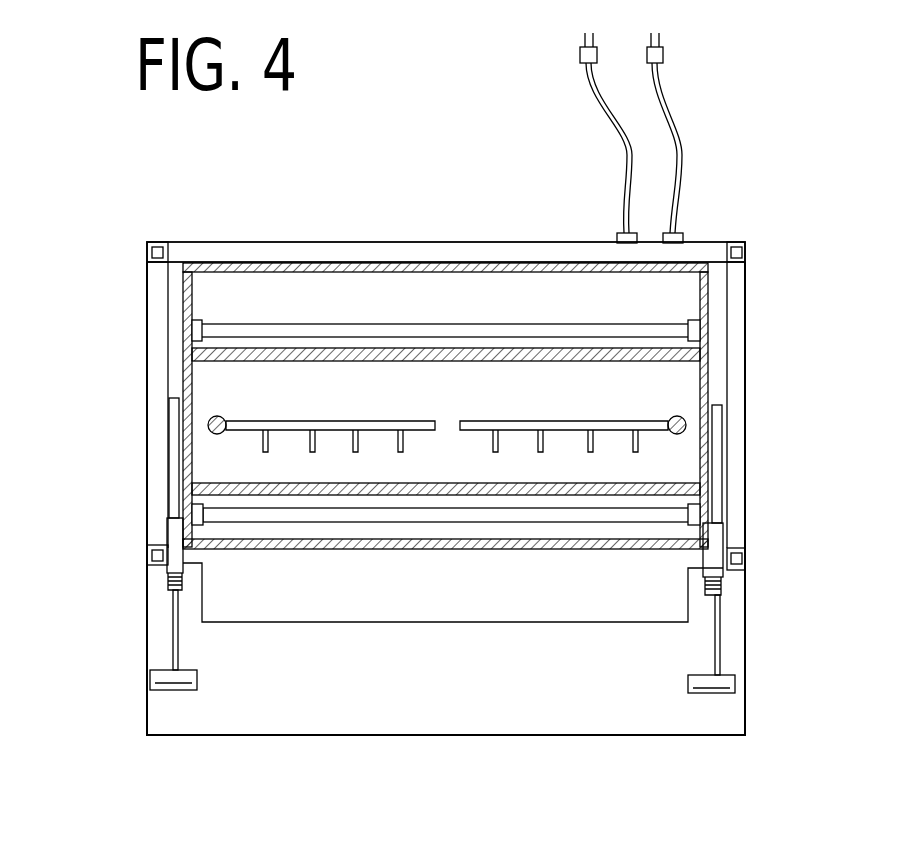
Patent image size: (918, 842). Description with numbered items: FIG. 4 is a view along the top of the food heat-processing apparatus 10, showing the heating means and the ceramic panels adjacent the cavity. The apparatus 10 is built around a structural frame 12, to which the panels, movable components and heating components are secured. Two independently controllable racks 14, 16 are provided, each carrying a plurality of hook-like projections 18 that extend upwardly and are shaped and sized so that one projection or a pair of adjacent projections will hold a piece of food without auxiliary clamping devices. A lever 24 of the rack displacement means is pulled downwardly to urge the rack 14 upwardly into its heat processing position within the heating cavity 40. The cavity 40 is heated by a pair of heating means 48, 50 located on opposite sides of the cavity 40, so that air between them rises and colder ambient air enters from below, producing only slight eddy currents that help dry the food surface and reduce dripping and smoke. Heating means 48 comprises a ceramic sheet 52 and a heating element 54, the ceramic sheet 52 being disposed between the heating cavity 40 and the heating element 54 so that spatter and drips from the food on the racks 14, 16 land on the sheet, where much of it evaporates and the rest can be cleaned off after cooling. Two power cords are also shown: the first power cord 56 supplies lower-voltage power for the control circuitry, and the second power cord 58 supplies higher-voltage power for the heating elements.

The apparatus 10 is at (105, 387).
The structural frame 12 is at (747, 258).
The rack 14 is at (325, 421).
The rack 16 is at (578, 421).
The hook-like projections 18 is at (358, 438).
The lever 24 is at (173, 638).
The heating cavity 40 is at (452, 375).
The heating means 48 is at (516, 292).
The heating means 50 is at (490, 568).
The ceramic sheet 52 is at (662, 362).
The heating element 54 is at (573, 324).
The first power cord 56 is at (586, 105).
The second power cord 58 is at (666, 128).